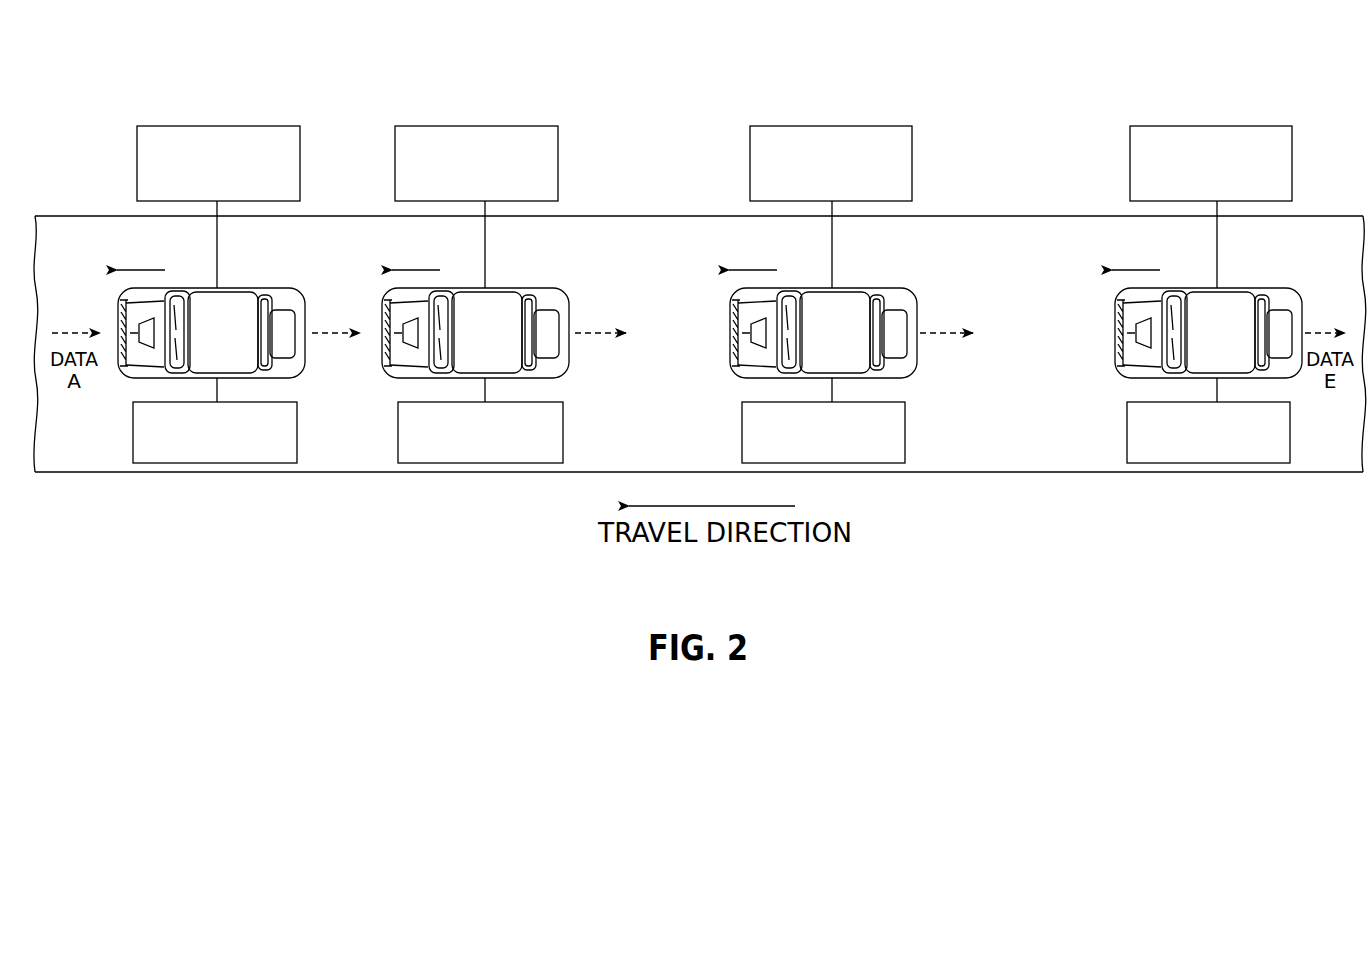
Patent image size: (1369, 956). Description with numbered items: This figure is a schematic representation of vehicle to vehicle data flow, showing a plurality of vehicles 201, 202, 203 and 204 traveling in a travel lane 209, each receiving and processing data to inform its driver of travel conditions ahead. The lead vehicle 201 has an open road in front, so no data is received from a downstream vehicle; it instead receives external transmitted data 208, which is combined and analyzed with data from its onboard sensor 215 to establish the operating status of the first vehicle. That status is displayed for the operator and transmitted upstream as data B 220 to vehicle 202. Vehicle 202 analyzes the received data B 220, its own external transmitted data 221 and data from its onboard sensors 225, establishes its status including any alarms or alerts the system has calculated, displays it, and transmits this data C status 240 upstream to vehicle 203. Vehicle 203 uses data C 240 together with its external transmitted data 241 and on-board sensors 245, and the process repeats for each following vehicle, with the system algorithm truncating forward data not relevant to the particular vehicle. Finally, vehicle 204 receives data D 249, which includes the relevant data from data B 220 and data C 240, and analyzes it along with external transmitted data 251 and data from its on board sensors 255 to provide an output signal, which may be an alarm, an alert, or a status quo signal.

The vehicle 201 is at (240, 288).
The vehicle 202 is at (508, 288).
The vehicle 203 is at (872, 288).
The vehicle 204 is at (1256, 288).
The external transmitted data 208 is at (239, 126).
The travel lane 209 is at (665, 240).
The onboard sensor 215 is at (297, 430).
The data B 220 is at (352, 323).
The external transmitted data 221 is at (506, 126).
The onboard sensors 225 is at (563, 430).
The data C status 240 is at (617, 325).
The external transmitted data 241 is at (853, 126).
The on-board sensors 245 is at (905, 430).
The data D 249 is at (963, 325).
The external transmitted data 251 is at (1220, 126).
The on board sensors 255 is at (1290, 430).